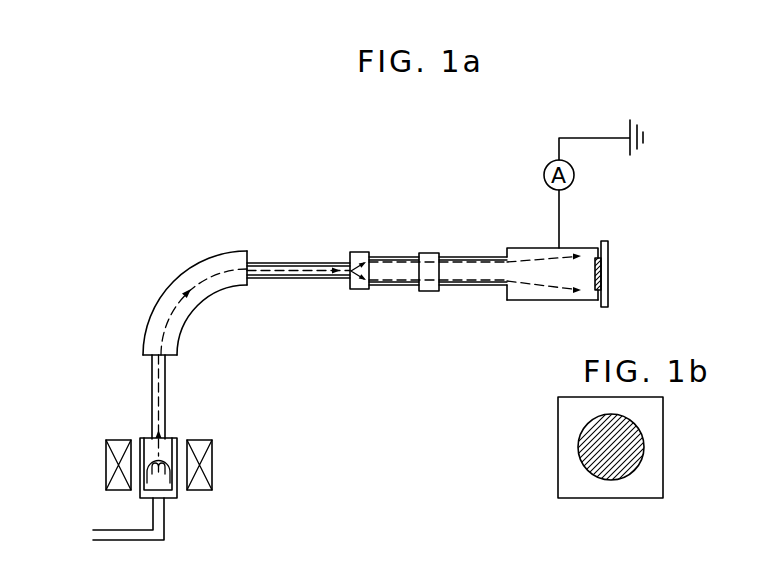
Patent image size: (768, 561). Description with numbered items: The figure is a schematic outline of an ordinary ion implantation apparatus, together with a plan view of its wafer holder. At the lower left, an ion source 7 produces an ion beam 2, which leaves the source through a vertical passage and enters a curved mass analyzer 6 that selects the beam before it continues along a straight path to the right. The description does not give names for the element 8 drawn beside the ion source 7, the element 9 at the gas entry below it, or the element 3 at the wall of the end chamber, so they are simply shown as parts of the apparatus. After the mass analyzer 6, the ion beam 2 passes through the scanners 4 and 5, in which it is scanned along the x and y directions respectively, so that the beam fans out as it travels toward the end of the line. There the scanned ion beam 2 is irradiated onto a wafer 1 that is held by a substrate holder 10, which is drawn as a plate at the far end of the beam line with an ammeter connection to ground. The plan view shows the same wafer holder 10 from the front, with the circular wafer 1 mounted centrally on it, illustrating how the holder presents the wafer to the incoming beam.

In FIG. 1a, the wafer 1 is at (603, 285).
In FIG. 1b, the wafer 1 is at (640, 453).
In FIG. 1a, the ion beam 2 is at (537, 288).
In FIG. 1a, the chamber wall 3 is at (552, 300).
In FIG. 1a, the scanner 4 is at (430, 253).
In FIG. 1a, the scanner 5 is at (360, 251).
In FIG. 1a, the mass analyzer 6 is at (178, 284).
In FIG. 1a, the ion source 7 is at (168, 453).
In FIG. 1a, the magnet coils 8 is at (106, 468).
In FIG. 1a, the gas inlet 9 is at (120, 534).
In FIG. 1a, the substrate holder 10 is at (610, 252).
In FIG. 1b, the substrate holder 10 is at (663, 428).